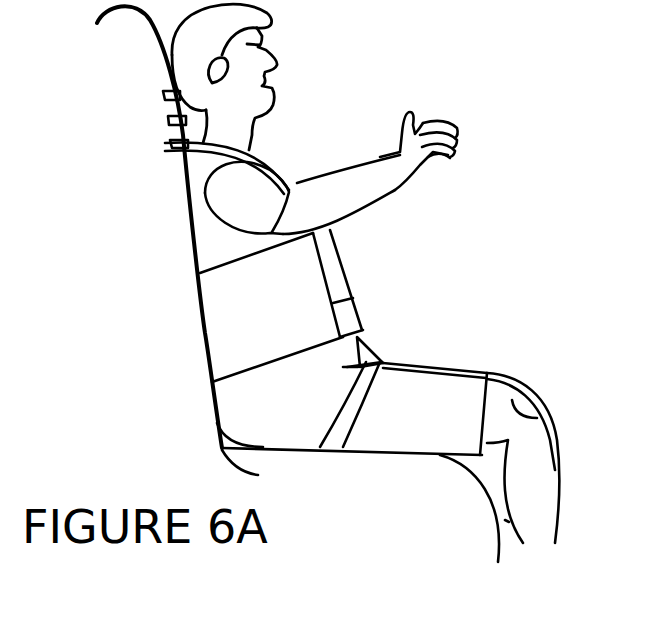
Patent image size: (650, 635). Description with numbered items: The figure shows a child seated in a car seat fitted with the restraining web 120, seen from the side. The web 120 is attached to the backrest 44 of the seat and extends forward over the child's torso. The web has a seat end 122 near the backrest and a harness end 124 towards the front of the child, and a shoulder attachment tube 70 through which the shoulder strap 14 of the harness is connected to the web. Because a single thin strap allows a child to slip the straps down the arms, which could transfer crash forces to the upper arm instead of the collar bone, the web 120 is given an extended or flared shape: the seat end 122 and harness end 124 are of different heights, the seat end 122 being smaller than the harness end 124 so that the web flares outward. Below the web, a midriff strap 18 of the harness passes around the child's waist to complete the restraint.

The backrest 44 is at (140, 37).
The shoulder strap 14 is at (277, 150).
The shoulder attachment tube 70 is at (337, 272).
The seat end 122 is at (190, 315).
The harness end 124 is at (342, 293).
The web 120 is at (240, 333).
The midriff strap 18 is at (355, 413).